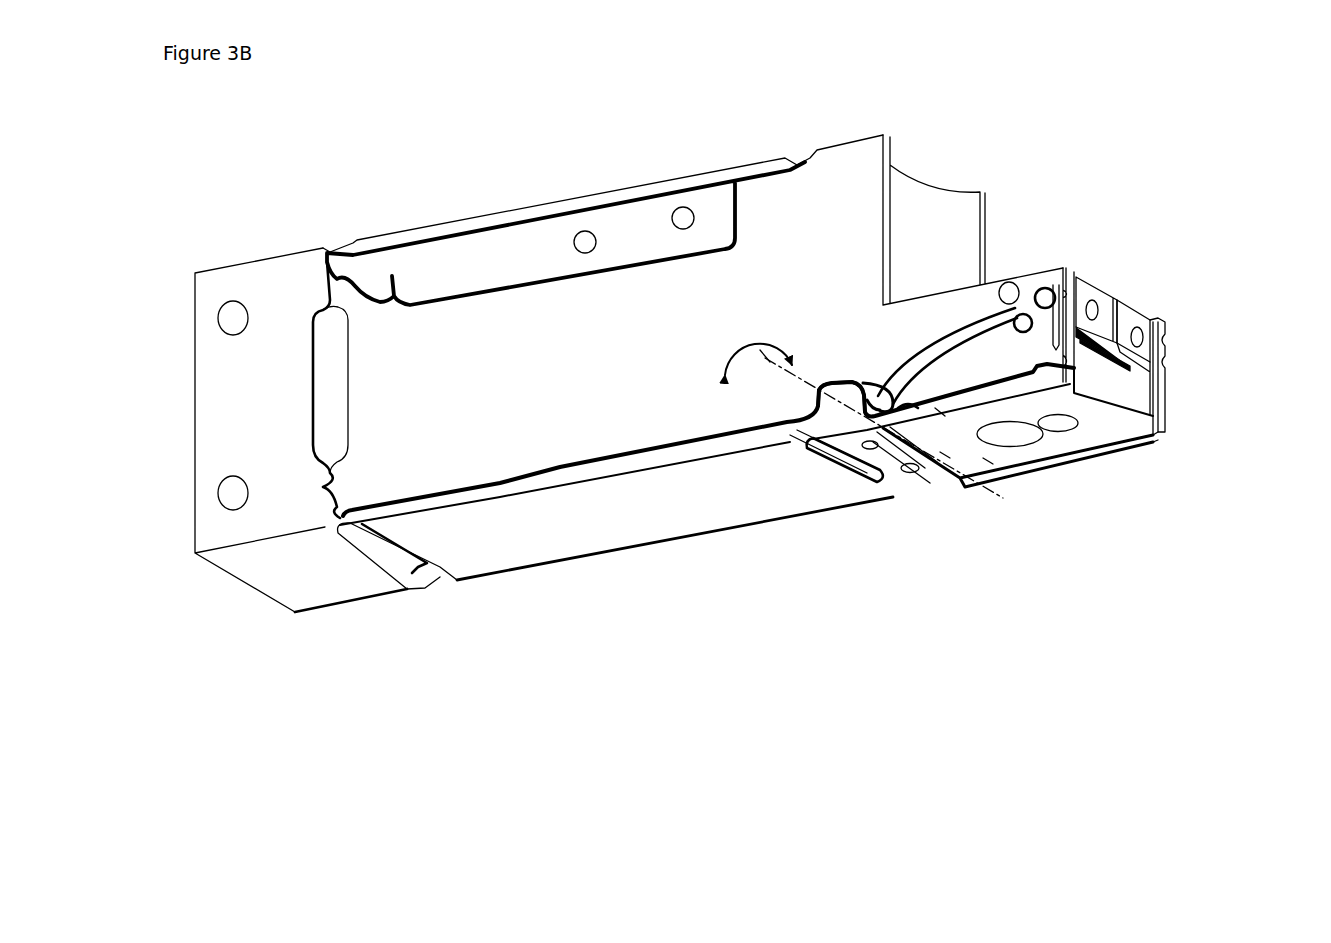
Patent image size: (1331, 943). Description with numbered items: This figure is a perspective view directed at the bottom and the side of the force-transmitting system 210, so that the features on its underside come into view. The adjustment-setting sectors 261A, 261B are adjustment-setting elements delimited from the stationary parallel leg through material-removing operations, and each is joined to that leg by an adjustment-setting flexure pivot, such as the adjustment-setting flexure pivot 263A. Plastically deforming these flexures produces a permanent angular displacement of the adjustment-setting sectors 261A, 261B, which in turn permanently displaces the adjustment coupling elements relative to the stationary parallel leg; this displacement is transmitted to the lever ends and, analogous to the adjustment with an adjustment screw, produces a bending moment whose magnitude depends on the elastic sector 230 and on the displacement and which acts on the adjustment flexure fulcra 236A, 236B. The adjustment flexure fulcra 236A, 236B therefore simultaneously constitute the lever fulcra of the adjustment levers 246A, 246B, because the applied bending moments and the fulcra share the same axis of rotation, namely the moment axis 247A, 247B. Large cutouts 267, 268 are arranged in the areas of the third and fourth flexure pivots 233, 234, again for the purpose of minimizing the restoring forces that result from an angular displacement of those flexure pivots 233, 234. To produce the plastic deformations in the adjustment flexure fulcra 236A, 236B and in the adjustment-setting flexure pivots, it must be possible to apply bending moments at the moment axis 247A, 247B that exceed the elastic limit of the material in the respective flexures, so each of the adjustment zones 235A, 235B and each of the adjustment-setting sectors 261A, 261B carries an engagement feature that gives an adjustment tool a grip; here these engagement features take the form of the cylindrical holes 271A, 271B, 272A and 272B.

The force-transmitting system 210 is at (540, 188).
The third flexure pivot 233 is at (337, 528).
The large cutout 267 is at (385, 565).
The fourth flexure pivot 234 is at (795, 430).
The moment axis 247A is at (770, 358).
The large cutout 268 is at (815, 458).
The cylindrical hole 272A is at (855, 468).
The adjustment lever 246A is at (872, 450).
The adjustment flexure fulcrum 236A is at (905, 474).
The cylindrical hole 272B is at (913, 470).
The adjustment zone 235B is at (908, 425).
The adjustment lever 246B is at (945, 455).
The adjustment flexure fulcrum 236B is at (988, 462).
The moment axis 247B is at (942, 414).
The elastic sector 230 is at (995, 492).
The adjustment zone 235A is at (845, 388).
The adjustment-setting flexure pivot 263A is at (1008, 282).
The adjustment-setting sector 261A is at (1088, 292).
The cylindrical hole 271A is at (1098, 309).
The cylindrical hole 271B is at (1143, 334).
The adjustment-setting sector 261B is at (1140, 355).